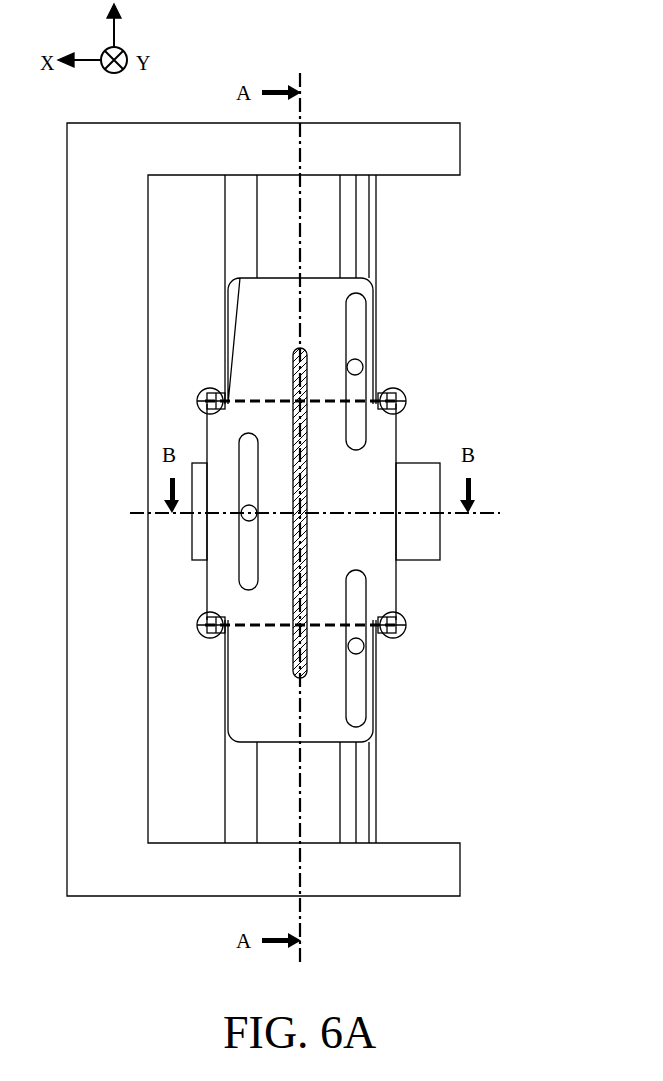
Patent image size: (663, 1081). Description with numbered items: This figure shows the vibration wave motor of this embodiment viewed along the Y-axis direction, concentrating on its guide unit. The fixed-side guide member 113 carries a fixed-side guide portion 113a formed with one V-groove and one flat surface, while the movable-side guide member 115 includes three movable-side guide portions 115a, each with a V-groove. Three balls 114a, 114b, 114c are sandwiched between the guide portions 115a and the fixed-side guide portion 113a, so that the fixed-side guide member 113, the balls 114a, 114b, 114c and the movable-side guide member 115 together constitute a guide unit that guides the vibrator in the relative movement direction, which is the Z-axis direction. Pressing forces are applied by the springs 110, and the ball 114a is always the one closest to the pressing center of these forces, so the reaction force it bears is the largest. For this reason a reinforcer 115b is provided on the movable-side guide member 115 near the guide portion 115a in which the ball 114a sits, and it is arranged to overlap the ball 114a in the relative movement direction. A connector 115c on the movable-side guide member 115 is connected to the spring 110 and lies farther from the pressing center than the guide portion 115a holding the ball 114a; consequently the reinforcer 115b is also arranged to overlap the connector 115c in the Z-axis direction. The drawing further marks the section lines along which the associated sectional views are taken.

The spring 110 is at (400, 638).
The fixed-side guide member 113 is at (376, 218).
The fixed-side guide portion 113a is at (237, 253).
The ball 114a is at (247, 520).
The ball 114b is at (362, 367).
The ball 114c is at (358, 648).
The movable-side guide member 115 is at (393, 585).
The movable-side guide portion 115a is at (357, 322).
The reinforcer 115b is at (303, 475).
The connector 115c is at (400, 401).